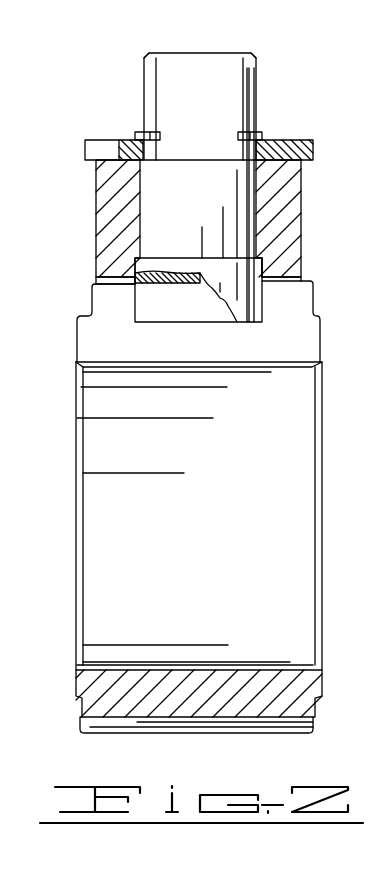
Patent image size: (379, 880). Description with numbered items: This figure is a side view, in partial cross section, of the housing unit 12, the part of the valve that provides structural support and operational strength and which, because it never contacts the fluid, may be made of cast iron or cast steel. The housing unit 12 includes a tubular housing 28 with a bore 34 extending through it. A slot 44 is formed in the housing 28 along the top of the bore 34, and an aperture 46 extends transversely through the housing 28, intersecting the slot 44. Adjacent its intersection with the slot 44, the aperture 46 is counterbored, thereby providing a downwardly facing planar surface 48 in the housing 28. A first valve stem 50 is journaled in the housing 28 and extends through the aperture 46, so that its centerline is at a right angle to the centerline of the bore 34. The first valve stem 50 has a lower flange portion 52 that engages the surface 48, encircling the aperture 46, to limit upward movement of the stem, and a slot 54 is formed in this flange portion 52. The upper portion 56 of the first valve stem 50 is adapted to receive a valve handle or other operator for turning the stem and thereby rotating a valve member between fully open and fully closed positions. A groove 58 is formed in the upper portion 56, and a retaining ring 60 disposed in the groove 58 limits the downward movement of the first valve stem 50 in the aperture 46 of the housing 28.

The housing unit 12 is at (318, 270).
The tubular housing 28 is at (290, 192).
The bore 34 is at (188, 530).
The slot 44 is at (135, 348).
The aperture 46 is at (145, 226).
The planar surface 48 is at (257, 257).
The first valve stem 50 is at (201, 197).
The lower flange portion 52 is at (245, 298).
The slot 54 is at (185, 310).
The upper portion 56 is at (235, 82).
The groove 58 is at (250, 130).
The retaining ring 60 is at (140, 132).